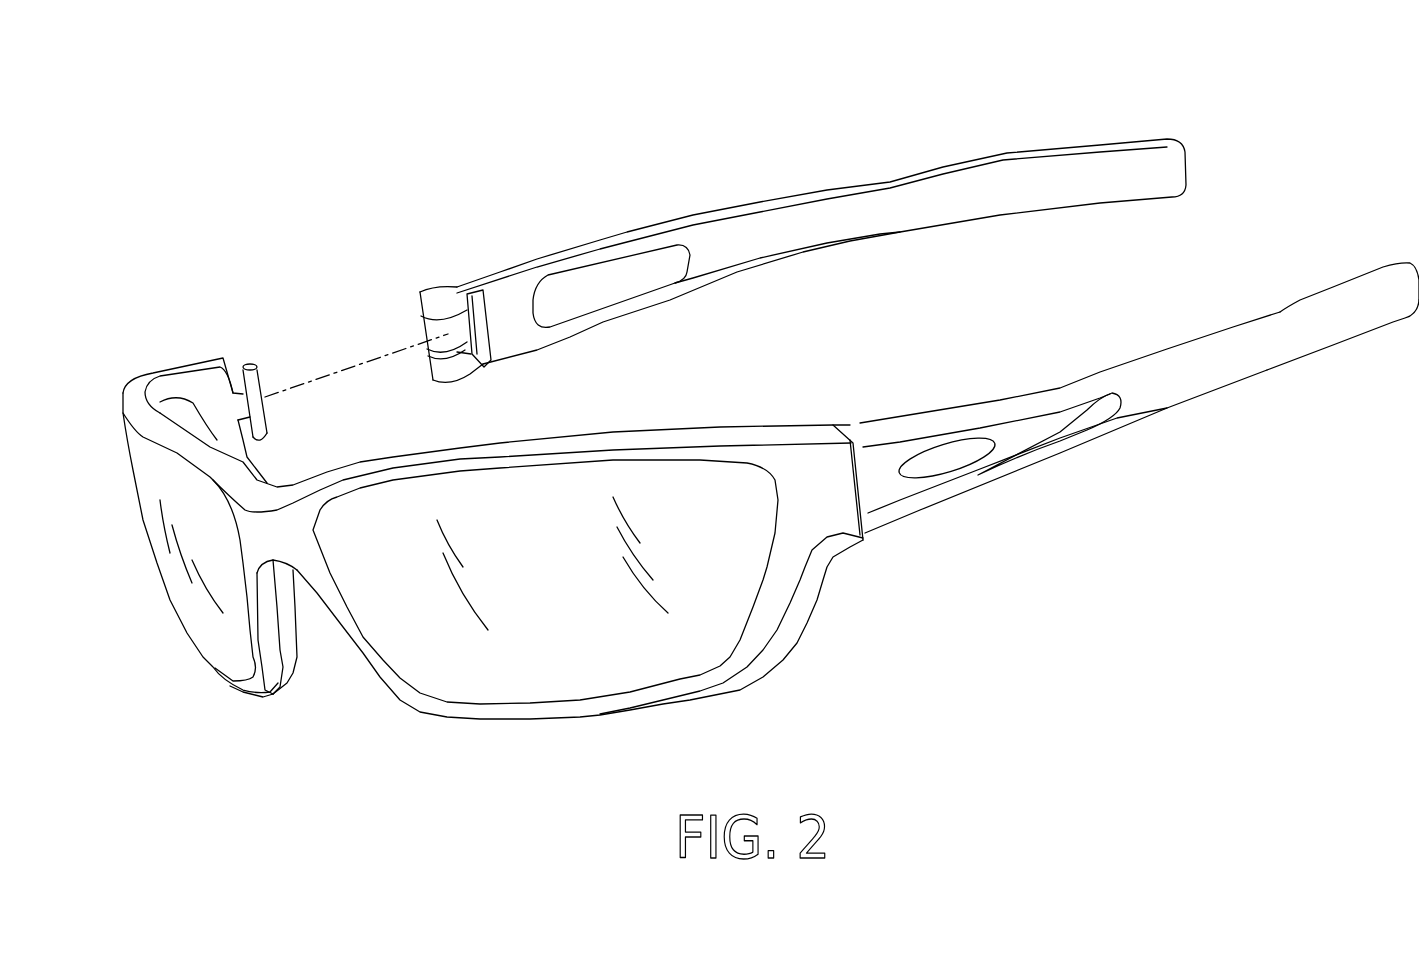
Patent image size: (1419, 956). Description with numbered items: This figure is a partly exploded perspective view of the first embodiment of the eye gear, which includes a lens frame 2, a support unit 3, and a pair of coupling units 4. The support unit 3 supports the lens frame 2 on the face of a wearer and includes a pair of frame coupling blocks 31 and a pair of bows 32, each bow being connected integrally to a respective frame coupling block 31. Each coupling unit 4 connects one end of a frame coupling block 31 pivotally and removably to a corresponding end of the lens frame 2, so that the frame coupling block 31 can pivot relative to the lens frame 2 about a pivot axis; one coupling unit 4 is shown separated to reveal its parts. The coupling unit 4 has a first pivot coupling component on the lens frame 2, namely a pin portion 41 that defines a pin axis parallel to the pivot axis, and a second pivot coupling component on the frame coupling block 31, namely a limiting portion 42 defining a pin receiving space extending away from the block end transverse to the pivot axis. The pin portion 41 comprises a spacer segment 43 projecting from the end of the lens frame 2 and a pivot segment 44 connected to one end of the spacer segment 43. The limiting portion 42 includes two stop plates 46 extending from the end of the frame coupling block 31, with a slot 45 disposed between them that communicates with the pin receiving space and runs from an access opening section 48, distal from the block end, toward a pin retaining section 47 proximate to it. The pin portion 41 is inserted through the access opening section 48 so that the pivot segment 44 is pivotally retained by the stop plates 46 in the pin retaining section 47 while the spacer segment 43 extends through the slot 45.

The lens frame 2 is at (250, 742).
The support unit 3 is at (864, 150).
The frame coupling block 31 is at (457, 285).
The bow 32 is at (1058, 165).
The coupling unit 4 is at (364, 304).
The pin portion 41 is at (211, 351).
The limiting portion 42 is at (435, 298).
The spacer segment 43 is at (243, 410).
The pivot segment 44 is at (250, 364).
The slot 45 is at (445, 336).
The stop plate 46 is at (428, 308).
The pin retaining section 47 is at (463, 360).
The access opening section 48 is at (500, 330).